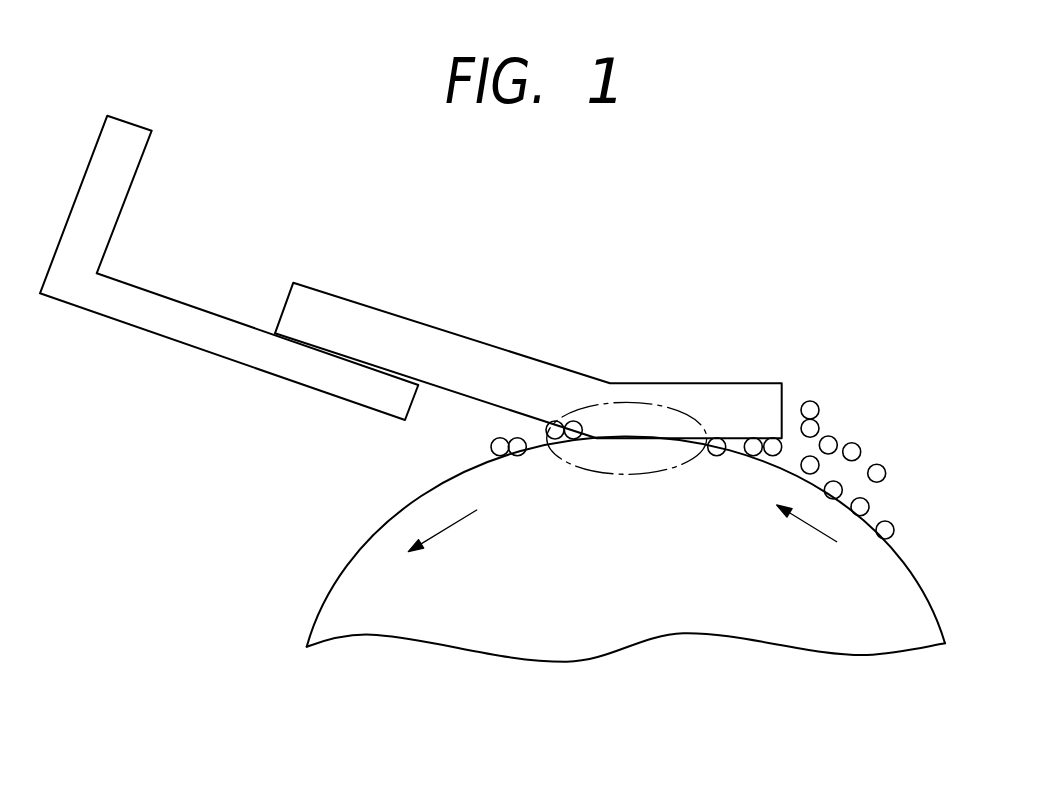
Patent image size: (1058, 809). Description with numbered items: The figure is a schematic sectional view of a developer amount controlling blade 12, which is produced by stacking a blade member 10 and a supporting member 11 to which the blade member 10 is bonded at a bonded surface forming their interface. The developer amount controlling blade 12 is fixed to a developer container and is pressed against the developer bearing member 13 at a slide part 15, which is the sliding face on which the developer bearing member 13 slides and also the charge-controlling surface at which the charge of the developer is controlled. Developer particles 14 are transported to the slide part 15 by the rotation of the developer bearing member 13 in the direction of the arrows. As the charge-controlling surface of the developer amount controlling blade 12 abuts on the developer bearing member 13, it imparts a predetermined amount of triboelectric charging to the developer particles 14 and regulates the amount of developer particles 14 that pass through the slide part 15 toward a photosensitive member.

The blade member 10 is at (317, 303).
The supporting member 11 is at (157, 307).
The developer amount controlling blade 12 is at (317, 143).
The developer bearing member 13 is at (783, 630).
The developer particles 14 is at (878, 467).
The slide part 15 is at (557, 453).